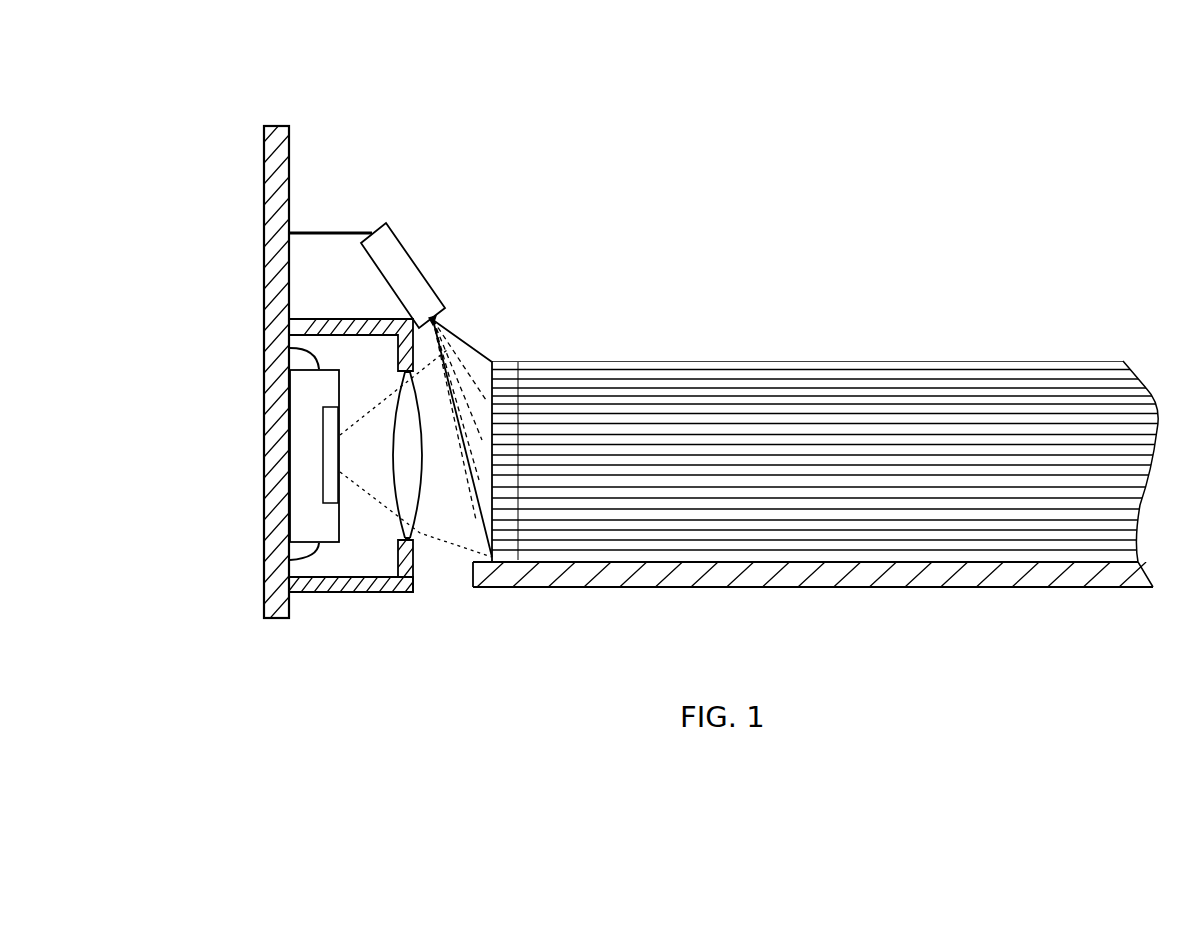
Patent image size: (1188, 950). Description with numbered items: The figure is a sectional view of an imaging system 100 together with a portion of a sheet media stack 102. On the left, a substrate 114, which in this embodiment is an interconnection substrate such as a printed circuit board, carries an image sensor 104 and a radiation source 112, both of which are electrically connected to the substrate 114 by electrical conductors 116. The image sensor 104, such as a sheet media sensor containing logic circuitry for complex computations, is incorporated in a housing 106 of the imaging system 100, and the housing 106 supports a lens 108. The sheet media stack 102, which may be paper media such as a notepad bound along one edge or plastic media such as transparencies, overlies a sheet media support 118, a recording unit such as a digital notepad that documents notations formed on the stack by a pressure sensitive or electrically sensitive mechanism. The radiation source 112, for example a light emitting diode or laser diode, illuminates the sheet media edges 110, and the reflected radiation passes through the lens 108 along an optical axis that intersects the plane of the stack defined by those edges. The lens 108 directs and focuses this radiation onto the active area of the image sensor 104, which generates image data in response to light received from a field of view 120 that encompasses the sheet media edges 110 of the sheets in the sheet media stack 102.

The imaging system 100 is at (341, 90).
The sheet media stack 102 is at (817, 333).
The image sensor 104 is at (310, 482).
The housing 106 is at (370, 593).
The lens 108 is at (407, 458).
The sheet media edges 110 is at (521, 460).
The radiation source 112 is at (400, 222).
The substrate 114 is at (268, 530).
The electrical conductors 116 is at (336, 230).
The sheet media support 118 is at (905, 587).
The field of view 120 is at (450, 347).